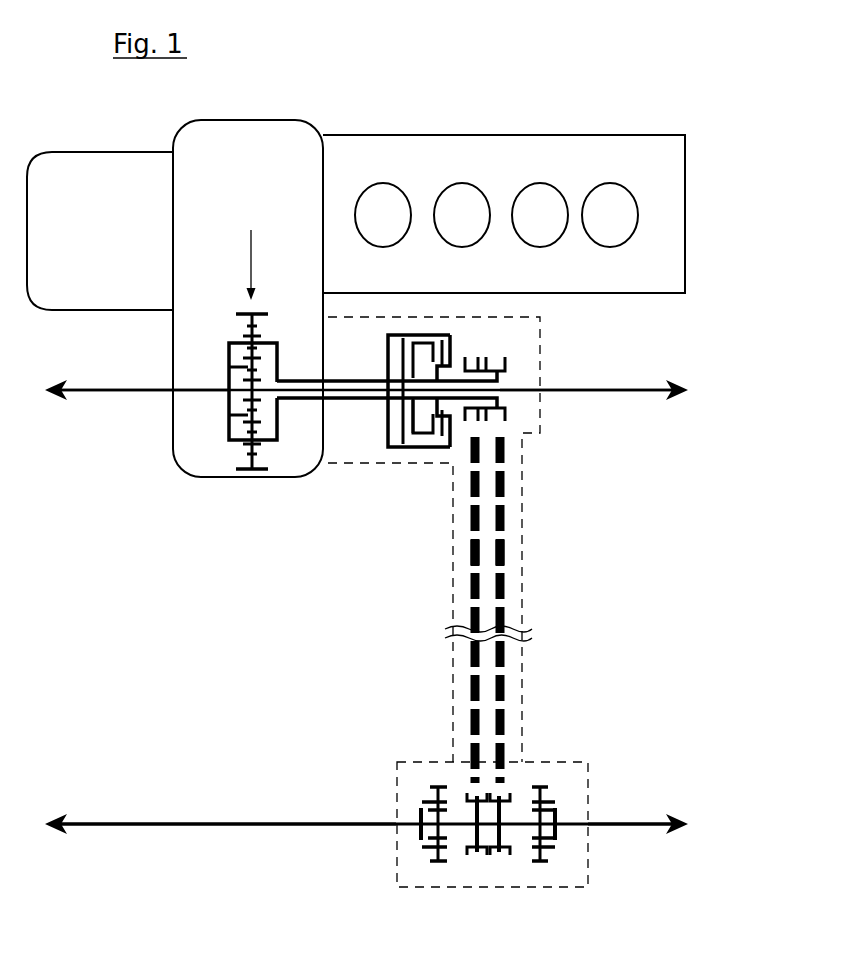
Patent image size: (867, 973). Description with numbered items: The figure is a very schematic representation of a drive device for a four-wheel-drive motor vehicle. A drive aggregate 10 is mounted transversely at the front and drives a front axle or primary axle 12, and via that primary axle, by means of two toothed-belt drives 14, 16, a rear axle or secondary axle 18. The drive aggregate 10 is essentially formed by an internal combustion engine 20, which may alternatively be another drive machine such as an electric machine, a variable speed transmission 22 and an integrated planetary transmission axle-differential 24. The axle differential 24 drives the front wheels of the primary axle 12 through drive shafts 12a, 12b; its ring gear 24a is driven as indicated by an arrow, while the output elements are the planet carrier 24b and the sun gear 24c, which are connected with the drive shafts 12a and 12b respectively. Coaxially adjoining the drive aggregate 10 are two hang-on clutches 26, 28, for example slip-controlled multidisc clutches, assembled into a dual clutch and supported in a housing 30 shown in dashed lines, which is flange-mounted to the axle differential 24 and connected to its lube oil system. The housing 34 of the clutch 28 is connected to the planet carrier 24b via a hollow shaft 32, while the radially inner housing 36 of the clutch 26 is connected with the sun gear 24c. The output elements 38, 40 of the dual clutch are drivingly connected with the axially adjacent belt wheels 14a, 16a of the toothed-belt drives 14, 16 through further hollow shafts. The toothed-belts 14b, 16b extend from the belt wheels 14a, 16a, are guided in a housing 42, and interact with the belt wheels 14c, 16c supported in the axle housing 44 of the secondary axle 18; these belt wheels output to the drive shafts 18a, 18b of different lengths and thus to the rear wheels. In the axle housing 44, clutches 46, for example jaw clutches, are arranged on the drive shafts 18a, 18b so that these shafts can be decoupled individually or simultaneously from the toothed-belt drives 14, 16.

The drive aggregate 10 is at (630, 109).
The primary axle 12 is at (548, 445).
The drive shaft 12a is at (90, 392).
The drive shaft 12b is at (632, 388).
The toothed-belt drive 14 is at (466, 587).
The belt wheel 14a is at (458, 357).
The toothed-belt 14b is at (470, 556).
The belt wheel 14c is at (478, 856).
The toothed-belt drive 16 is at (510, 588).
The belt wheel 16a is at (505, 358).
The toothed-belt 16b is at (505, 556).
The belt wheel 16c is at (500, 856).
The secondary axle 18 is at (602, 765).
The drive shaft 18a is at (192, 824).
The drive shaft 18b is at (637, 824).
The internal combustion engine 20 is at (650, 170).
The variable speed transmission 22 is at (118, 244).
The planetary transmission axle-differential 24 is at (222, 449).
The ring gear 24a is at (246, 472).
The planet carrier 24b is at (229, 352).
The sun gear 24c is at (229, 392).
The hang-on clutch 26 is at (395, 443).
The hang-on clutch 28 is at (443, 438).
The housing 30 is at (545, 322).
The hollow shaft 32 is at (352, 379).
The housing 34 is at (388, 333).
The radially inner housing 36 is at (406, 333).
The output element 38 is at (480, 358).
The output element 40 is at (400, 428).
The housing 42 is at (525, 692).
The axle housing 44 is at (395, 867).
The jaw clutch 46 is at (422, 780).